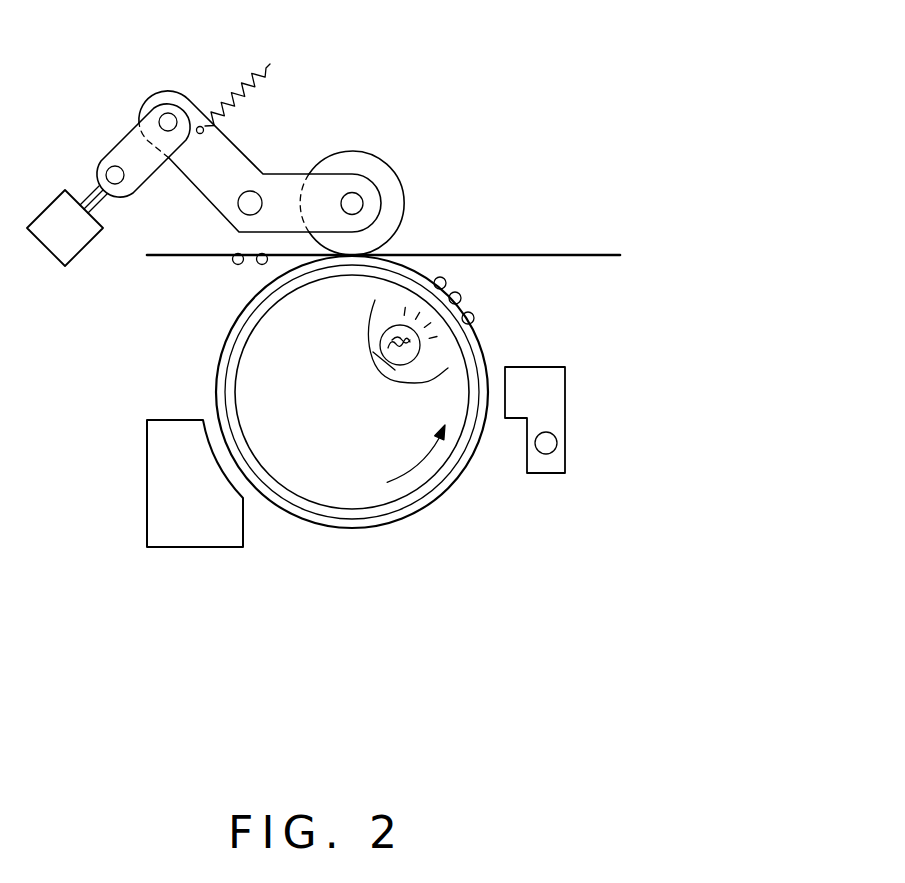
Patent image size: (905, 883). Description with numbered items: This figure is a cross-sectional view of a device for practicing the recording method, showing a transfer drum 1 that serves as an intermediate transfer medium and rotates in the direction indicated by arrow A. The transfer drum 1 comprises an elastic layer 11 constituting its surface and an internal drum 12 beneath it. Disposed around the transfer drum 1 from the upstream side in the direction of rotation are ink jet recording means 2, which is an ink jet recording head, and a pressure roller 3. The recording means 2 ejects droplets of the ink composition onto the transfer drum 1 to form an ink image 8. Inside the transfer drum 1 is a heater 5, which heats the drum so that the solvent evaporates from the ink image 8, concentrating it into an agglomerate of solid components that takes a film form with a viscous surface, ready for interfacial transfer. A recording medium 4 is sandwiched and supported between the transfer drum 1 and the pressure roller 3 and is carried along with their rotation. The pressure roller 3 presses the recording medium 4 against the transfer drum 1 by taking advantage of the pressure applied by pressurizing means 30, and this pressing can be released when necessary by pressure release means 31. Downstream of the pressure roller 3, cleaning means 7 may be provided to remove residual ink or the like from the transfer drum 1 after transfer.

The transfer drum 1 is at (352, 451).
The elastic layer 11 is at (316, 520).
The internal drum 12 is at (295, 589).
The ink jet recording means 2 is at (570, 440).
The pressure roller 3 is at (404, 193).
The recording medium 4 is at (551, 253).
The heater 5 is at (367, 355).
The cleaning means 7 is at (152, 468).
The ink image 8 is at (461, 299).
The pressurizing means 30 is at (224, 24).
The pressure release means 31 is at (128, 111).
The rotation direction A is at (413, 453).